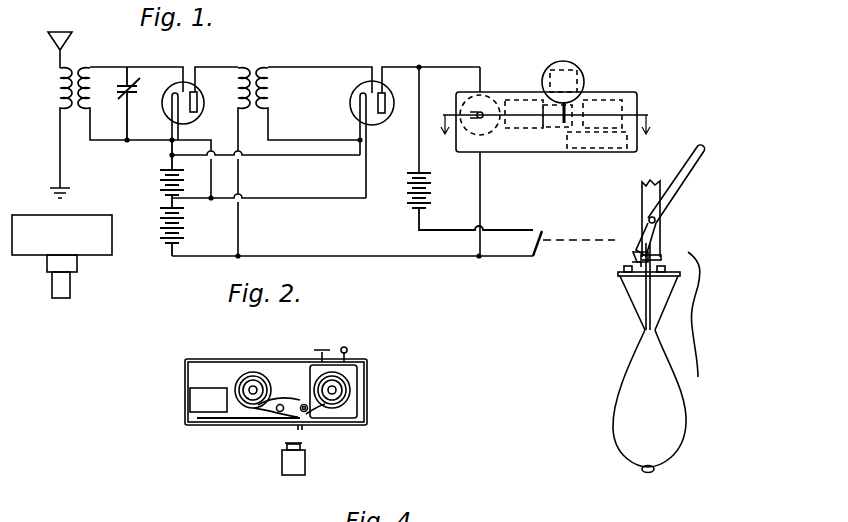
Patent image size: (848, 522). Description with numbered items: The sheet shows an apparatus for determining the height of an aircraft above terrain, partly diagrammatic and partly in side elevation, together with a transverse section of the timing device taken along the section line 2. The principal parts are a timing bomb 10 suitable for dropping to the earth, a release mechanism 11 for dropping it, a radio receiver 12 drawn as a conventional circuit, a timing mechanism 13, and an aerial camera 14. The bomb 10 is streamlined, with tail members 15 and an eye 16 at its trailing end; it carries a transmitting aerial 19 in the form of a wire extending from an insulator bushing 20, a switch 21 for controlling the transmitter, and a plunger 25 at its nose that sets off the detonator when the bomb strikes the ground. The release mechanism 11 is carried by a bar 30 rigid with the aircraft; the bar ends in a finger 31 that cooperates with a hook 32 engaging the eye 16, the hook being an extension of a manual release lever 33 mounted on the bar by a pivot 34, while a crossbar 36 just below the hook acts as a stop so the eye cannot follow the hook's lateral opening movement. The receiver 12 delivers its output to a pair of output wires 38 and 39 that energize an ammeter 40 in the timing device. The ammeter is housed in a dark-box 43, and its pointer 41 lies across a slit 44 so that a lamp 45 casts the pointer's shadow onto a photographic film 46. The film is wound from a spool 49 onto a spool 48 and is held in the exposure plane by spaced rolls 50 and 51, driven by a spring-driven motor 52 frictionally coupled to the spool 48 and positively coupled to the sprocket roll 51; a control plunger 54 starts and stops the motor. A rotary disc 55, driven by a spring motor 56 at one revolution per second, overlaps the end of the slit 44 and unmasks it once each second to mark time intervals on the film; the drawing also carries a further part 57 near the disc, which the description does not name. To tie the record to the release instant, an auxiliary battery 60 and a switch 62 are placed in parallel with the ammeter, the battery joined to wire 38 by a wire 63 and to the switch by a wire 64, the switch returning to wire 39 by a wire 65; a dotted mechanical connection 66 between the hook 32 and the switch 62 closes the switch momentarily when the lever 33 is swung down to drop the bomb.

In FIG. 1, the timing bomb 10 is at (611, 411).
In FIG. 1, the release mechanism 11 is at (684, 212).
In FIG. 1, the radio receiver 12 is at (274, 53).
In FIG. 1, the timing mechanism 13 is at (641, 80).
In FIG. 2, the timing mechanism 13 is at (183, 372).
In FIG. 1, the aerial camera 14 is at (94, 224).
In FIG. 1, the tail members 15 is at (636, 303).
In FIG. 1, the eye 16 is at (662, 258).
In FIG. 1, the transmitting aerial 19 is at (695, 318).
In FIG. 1, the insulator bushing 20 is at (680, 274).
In FIG. 1, the switch 21 is at (619, 276).
In FIG. 1, the plunger 25 is at (656, 468).
In FIG. 1, the bar 30 is at (642, 196).
In FIG. 1, the finger 31 is at (661, 247).
In FIG. 1, the hook 32 is at (636, 252).
In FIG. 1, the manual release lever 33 is at (686, 172).
In FIG. 1, the pivot 34 is at (662, 216).
In FIG. 1, the crossbar 36 is at (624, 269).
In FIG. 1, the output wire 38 is at (450, 66).
In FIG. 1, the output wire 39 is at (455, 257).
In FIG. 1, the ammeter 40 is at (481, 92).
In FIG. 2, the ammeter 40 is at (195, 400).
In FIG. 1, the pointer 41 is at (505, 138).
In FIG. 2, the pointer 41 is at (206, 425).
In FIG. 1, the dark-box 43 is at (633, 103).
In FIG. 2, the dark-box 43 is at (197, 359).
In FIG. 1, the slit 44 is at (565, 124).
In FIG. 2, the slit 44 is at (300, 426).
In FIG. 2, the lamp 45 is at (295, 477).
In FIG. 2, the photographic film 46 is at (263, 402).
In FIG. 2, the spool 48 is at (345, 391).
In FIG. 2, the spool 49 is at (249, 375).
In FIG. 2, the roll 50 is at (260, 421).
In FIG. 2, the roll 51 is at (320, 420).
In FIG. 2, the spring-driven motor 52 is at (353, 372).
In FIG. 2, the control plunger 54 is at (343, 348).
In FIG. 1, the rotary disc 55 is at (543, 75).
In FIG. 2, the rotary disc 55 is at (276, 438).
In FIG. 1, the spring motor 56 is at (564, 78).
In FIG. 1, the contact lead 57 is at (578, 92).
In FIG. 1, the auxiliary battery 60 is at (410, 200).
In FIG. 1, the switch 62 is at (538, 252).
In FIG. 1, the wire 63 is at (418, 96).
In FIG. 1, the wire 64 is at (506, 230).
In FIG. 1, the wire 65 is at (506, 257).
In FIG. 1, the mechanical connection 66 is at (571, 238).
In FIG. 1, the section line 2 is at (545, 124).